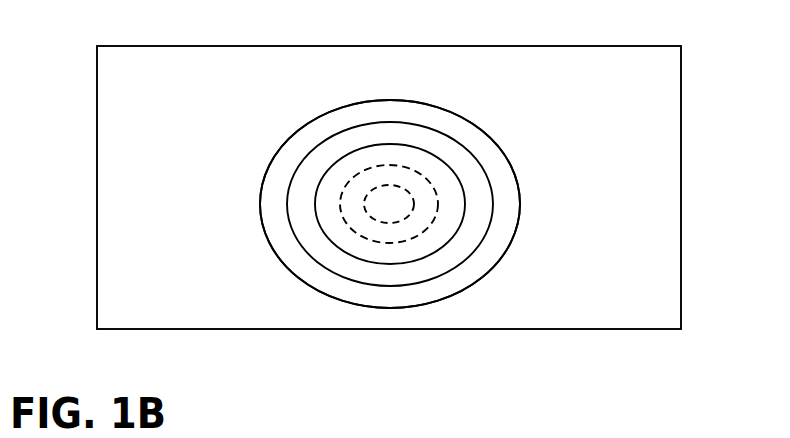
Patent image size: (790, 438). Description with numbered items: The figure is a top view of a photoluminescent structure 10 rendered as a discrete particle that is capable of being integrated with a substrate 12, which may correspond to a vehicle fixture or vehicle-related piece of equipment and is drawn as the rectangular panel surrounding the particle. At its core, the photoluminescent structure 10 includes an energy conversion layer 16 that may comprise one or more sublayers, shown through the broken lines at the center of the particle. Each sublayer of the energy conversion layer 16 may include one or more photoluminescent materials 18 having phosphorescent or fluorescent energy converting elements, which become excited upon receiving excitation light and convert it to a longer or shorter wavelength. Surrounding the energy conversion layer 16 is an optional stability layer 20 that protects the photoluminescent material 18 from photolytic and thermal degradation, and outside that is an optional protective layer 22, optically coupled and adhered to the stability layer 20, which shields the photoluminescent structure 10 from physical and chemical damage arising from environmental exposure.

The photoluminescent structure 10 is at (302, 108).
The substrate 12 is at (682, 143).
The energy conversion layer 16 is at (443, 248).
The photoluminescent material 18 is at (378, 216).
The stability layer 20 is at (452, 133).
The protective layer 22 is at (425, 102).